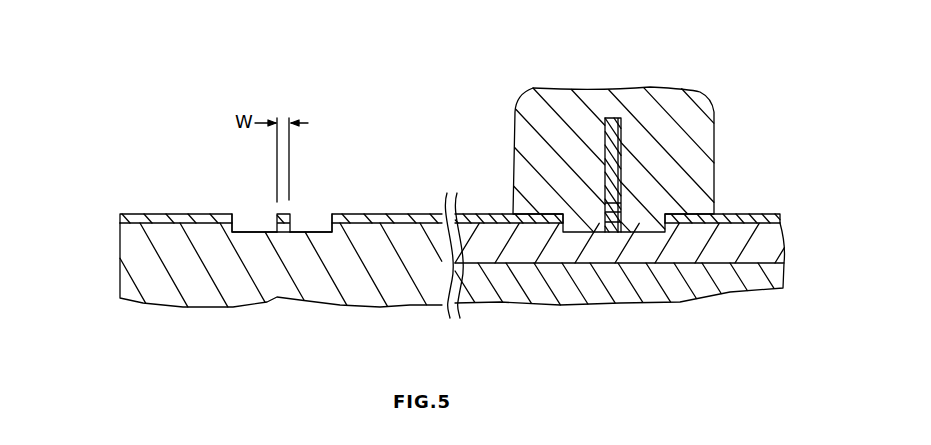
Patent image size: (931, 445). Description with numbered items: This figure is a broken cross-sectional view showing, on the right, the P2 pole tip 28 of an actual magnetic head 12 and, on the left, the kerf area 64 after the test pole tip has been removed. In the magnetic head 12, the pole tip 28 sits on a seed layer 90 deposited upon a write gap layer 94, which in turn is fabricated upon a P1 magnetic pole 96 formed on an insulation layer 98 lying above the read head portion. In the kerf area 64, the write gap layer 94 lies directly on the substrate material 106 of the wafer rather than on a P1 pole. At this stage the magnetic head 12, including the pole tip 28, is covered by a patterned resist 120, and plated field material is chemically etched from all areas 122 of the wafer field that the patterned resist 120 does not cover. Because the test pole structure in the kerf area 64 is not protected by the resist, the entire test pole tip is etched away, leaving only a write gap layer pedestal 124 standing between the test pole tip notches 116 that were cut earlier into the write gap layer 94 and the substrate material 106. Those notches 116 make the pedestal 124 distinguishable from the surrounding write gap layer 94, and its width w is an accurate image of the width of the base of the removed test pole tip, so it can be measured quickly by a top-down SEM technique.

The magnetic head 12 is at (663, 82).
The P2 pole tip 28 is at (612, 118).
The kerf area 64 is at (186, 131).
The seed layer 90 is at (720, 200).
The write gap layer 94 is at (119, 221).
The P1 magnetic pole 96 is at (787, 243).
The insulation layer 98 is at (785, 278).
The substrate material 106 is at (119, 278).
The test pole tip notches 116 is at (245, 212).
The patterned resist 120 is at (715, 122).
The areas of the wafer field 122 is at (143, 205).
The write gap layer pedestal 124 is at (277, 214).